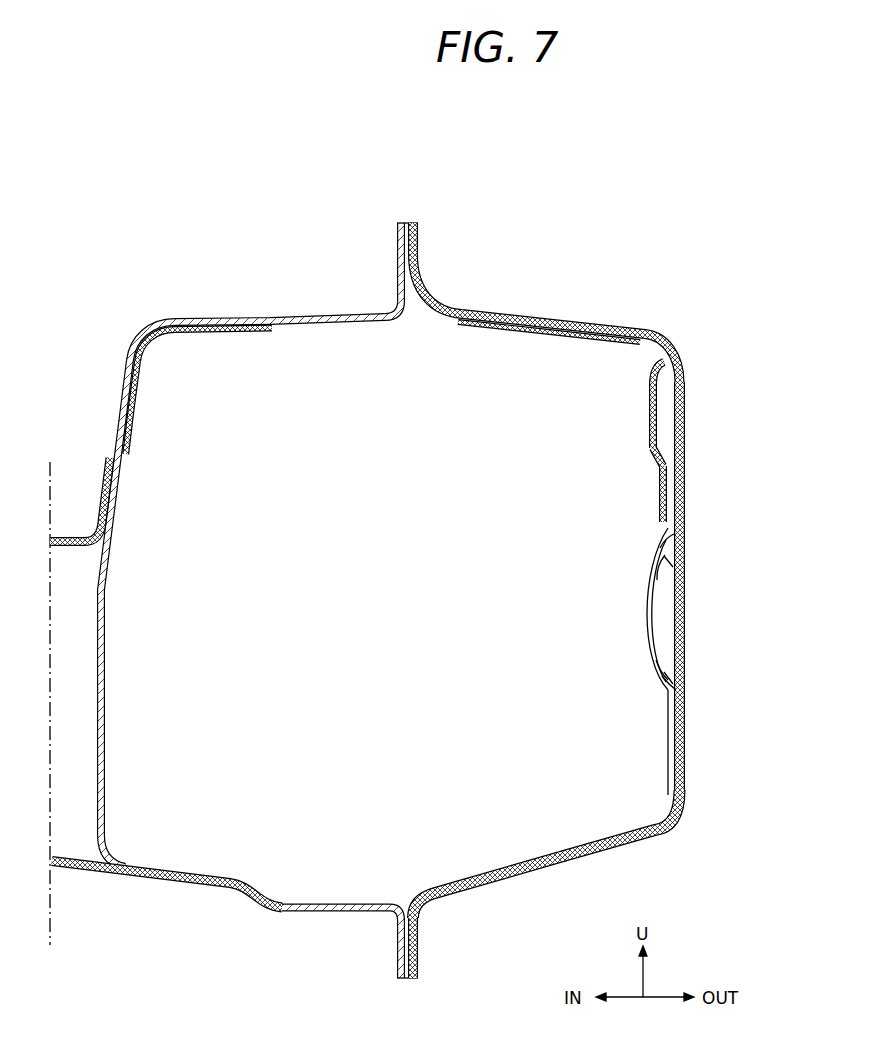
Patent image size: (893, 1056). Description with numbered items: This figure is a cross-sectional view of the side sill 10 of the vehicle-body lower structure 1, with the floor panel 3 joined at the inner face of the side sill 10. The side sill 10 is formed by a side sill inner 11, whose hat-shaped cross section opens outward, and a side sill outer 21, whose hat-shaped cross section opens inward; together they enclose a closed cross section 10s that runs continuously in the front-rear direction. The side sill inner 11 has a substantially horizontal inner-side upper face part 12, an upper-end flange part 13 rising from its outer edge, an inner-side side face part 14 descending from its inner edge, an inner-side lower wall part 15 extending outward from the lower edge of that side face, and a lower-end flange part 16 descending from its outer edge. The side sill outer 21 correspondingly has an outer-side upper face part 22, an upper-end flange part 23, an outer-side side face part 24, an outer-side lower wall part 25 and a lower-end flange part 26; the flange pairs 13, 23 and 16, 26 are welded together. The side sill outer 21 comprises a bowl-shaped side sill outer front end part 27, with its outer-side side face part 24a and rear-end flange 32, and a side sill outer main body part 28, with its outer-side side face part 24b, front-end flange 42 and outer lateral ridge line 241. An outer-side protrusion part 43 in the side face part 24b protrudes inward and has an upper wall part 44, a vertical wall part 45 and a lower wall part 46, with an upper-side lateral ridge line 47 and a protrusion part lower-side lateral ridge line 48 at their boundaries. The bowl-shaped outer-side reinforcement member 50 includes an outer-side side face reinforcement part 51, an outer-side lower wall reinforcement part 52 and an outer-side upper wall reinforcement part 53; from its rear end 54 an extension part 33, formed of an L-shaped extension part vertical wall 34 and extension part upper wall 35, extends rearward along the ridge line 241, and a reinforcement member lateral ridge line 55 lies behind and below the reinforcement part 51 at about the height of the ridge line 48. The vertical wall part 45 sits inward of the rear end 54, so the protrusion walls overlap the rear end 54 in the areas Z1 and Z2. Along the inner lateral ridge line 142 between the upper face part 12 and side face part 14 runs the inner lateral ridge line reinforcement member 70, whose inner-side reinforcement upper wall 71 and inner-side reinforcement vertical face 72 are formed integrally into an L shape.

The vehicle-body lower structure 1 is at (400, 588).
The side sill 10 is at (570, 217).
The closed cross section 10s is at (400, 602).
The floor panel 3 is at (63, 533).
The side sill inner 11 is at (397, 978).
The inner-side upper face part 12 is at (292, 315).
The upper-end flange part 13 is at (397, 241).
The inner-side side face part 14 is at (108, 745).
The inner-side lower wall part 15 is at (235, 886).
The lower-end flange part 16 is at (397, 934).
The side sill outer 21 is at (596, 739).
The outer-side upper face part 22 is at (532, 317).
The upper-end flange part 23 is at (418, 256).
The outer-side side face part 24 is at (722, 409).
The outer-side side face part 24a is at (684, 410).
The outer-side side face part 24b is at (682, 434).
The outer lateral ridge line 241 is at (676, 366).
The outer-side lower wall part 25 is at (553, 860).
The lower-end flange part 26 is at (419, 937).
The side sill outer front end part 27 is at (600, 754).
The side sill outer main body part 28 is at (599, 722).
The rear-end flange 32 is at (677, 514).
The extension part 33 is at (475, 328).
The extension part vertical wall 34 is at (647, 408).
The extension part upper wall 35 is at (568, 340).
The front-end flange 42 is at (677, 484).
The outer-side protrusion part 43 is at (650, 631).
The upper wall part 44 is at (660, 550).
The vertical wall part 45 is at (650, 600).
The lower wall part 46 is at (662, 677).
The upper-side lateral ridge line 47 is at (657, 572).
The protrusion part lower-side lateral ridge line 48 is at (652, 662).
The outer-side reinforcement member 50 is at (664, 647).
The outer-side side face reinforcement part 51 is at (658, 472).
The outer-side lower wall reinforcement part 52 is at (527, 848).
The outer-side upper wall reinforcement part 53 is at (516, 335).
The rear end 54 is at (659, 496).
The reinforcement member lateral ridge line 55 is at (665, 697).
The inner lateral ridge line reinforcement member 70 is at (136, 392).
The inner-side reinforcement upper wall 71 is at (233, 337).
The inner-side reinforcement vertical face 72 is at (138, 427).
The inner lateral ridge line 142 is at (147, 352).
The area Z1 is at (683, 565).
The area Z2 is at (703, 679).